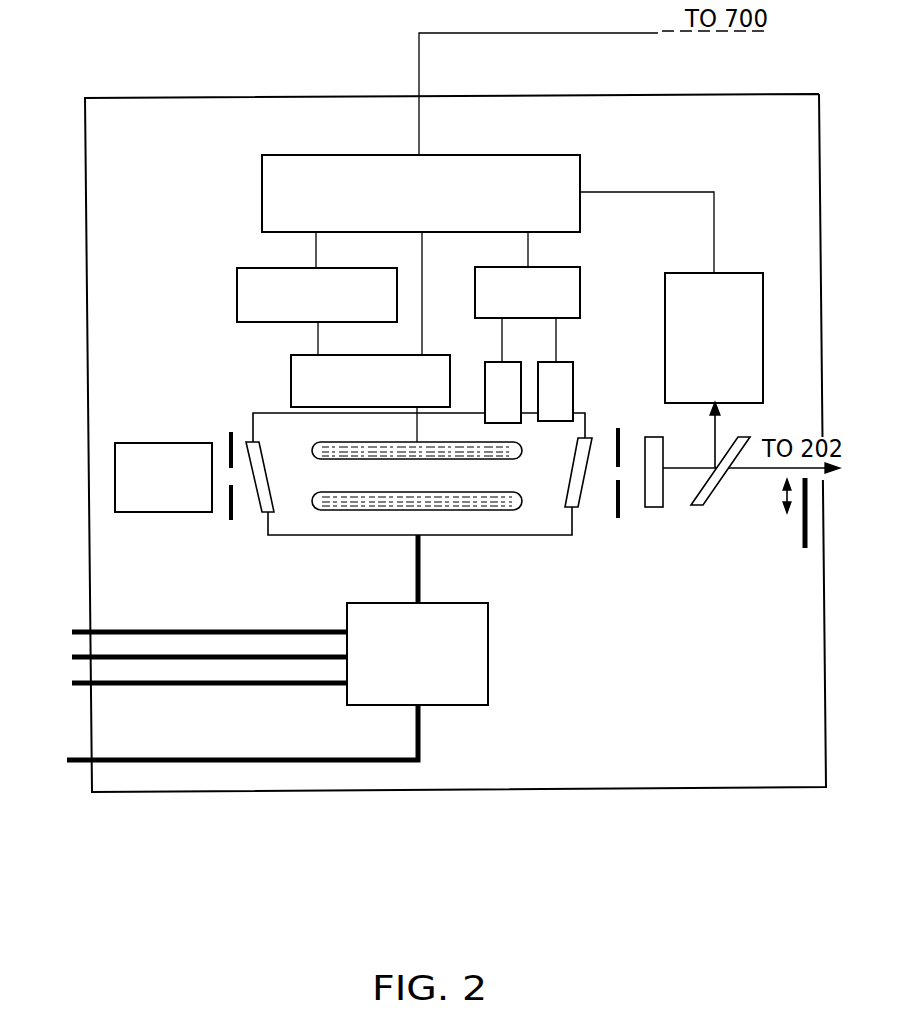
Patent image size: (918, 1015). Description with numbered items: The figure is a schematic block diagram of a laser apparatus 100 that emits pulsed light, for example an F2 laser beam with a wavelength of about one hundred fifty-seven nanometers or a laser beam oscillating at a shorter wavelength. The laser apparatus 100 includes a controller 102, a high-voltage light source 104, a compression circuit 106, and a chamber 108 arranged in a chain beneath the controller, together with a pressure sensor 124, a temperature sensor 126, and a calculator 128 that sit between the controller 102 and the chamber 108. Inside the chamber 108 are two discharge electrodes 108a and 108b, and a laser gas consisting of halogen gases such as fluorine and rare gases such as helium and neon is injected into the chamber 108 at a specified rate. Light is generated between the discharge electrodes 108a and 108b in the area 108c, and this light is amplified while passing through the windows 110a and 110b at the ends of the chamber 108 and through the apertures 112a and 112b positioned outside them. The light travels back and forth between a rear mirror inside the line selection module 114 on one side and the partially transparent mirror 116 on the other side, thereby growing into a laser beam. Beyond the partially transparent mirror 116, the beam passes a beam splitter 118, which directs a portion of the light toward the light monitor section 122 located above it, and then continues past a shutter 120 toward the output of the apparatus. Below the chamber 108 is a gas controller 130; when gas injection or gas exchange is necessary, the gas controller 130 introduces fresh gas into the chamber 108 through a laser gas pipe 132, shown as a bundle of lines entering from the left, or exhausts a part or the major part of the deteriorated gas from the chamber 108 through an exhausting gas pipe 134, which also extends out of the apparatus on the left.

The laser apparatus 100 is at (214, 97).
The controller 102 is at (280, 162).
The high-voltage light source 104 is at (270, 273).
The compression circuit 106 is at (291, 373).
The chamber 108 is at (253, 418).
The discharge electrode 108a is at (352, 446).
The discharge electrode 108b is at (352, 507).
The area 108c is at (417, 475).
The window 110a is at (265, 513).
The window 110b is at (580, 507).
The aperture 112a is at (228, 517).
The aperture 112b is at (620, 520).
The line selection module 114 is at (120, 512).
The partially transparent mirror 116 is at (663, 507).
The beam splitter 118 is at (720, 490).
The shutter 120 is at (803, 548).
The light monitor section 122 is at (756, 292).
The pressure sensor 124 is at (485, 373).
The temperature sensor 126 is at (573, 373).
The calculator 128 is at (568, 286).
The gas controller 130 is at (488, 645).
The laser gas pipe 132 is at (70, 628).
The exhausting gas pipe 134 is at (220, 739).